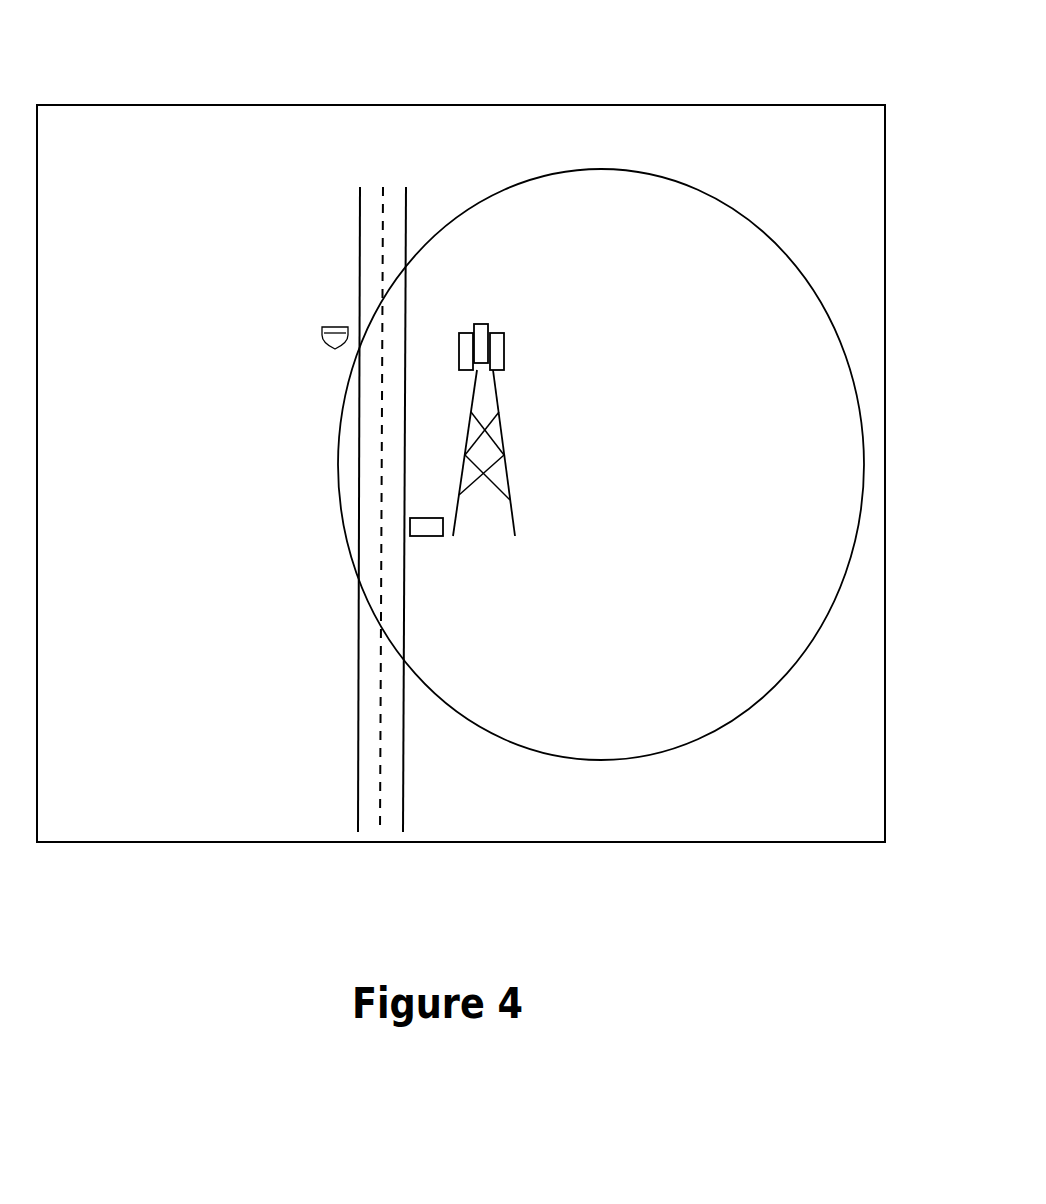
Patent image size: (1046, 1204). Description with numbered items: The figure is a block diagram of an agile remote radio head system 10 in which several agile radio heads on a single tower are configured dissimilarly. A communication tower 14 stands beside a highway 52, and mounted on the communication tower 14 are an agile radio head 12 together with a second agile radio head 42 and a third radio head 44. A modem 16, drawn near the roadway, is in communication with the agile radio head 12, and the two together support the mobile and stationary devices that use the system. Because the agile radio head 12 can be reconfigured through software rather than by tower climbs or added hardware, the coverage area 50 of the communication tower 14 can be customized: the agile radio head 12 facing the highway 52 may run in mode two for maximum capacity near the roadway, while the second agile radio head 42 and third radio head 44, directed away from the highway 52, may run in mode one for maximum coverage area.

The agile remote radio head system 10 is at (837, 105).
The agile radio head 12 is at (459, 337).
The communication tower 14 is at (503, 468).
The modem 16 is at (425, 536).
The second agile radio head 42 is at (477, 322).
The third radio head 44 is at (504, 346).
The coverage area 50 is at (735, 710).
The highway 52 is at (403, 794).